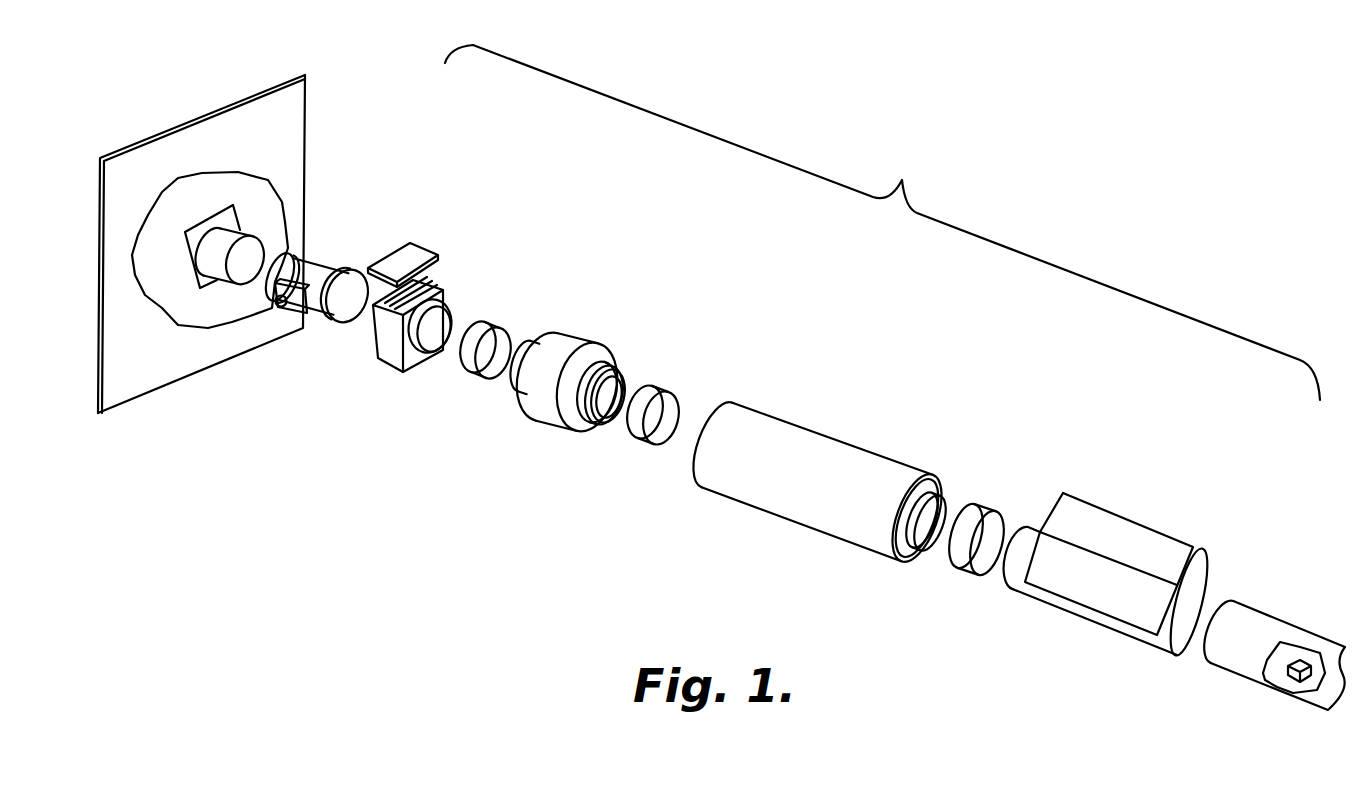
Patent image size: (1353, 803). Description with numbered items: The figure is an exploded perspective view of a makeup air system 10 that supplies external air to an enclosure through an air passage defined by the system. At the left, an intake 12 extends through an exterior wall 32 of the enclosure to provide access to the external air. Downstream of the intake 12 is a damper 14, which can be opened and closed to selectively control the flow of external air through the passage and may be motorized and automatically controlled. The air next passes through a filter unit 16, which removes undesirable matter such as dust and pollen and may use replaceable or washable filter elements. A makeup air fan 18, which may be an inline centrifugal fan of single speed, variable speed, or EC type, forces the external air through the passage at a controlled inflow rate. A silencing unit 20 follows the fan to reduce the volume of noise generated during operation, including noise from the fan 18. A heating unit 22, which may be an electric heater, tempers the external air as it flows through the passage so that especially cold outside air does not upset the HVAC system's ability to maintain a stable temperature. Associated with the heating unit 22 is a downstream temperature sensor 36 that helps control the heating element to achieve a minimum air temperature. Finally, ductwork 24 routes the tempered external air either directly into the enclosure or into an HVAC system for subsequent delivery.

The makeup air system 10 is at (965, 335).
The intake 12 is at (215, 223).
The damper 14 is at (317, 265).
The filter unit 16 is at (437, 285).
The makeup air fan 18 is at (580, 343).
The silencing unit 20 is at (833, 448).
The heating unit 22 is at (1097, 520).
The ductwork 24 is at (1243, 613).
The exterior wall 32 is at (292, 93).
The downstream temperature sensor 36 is at (1293, 680).